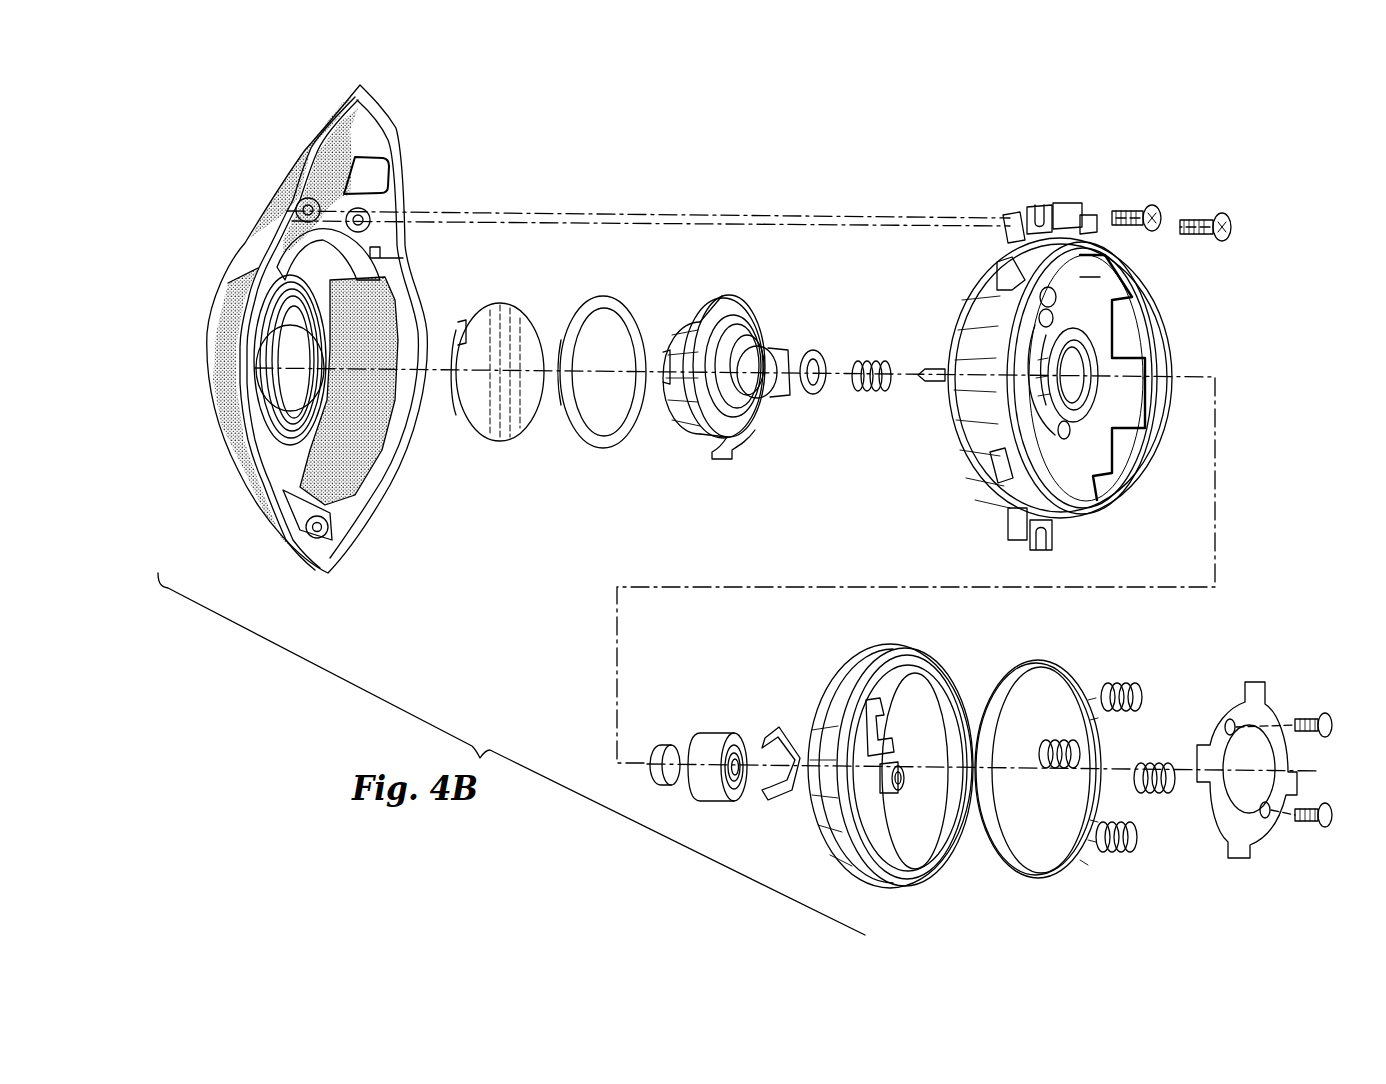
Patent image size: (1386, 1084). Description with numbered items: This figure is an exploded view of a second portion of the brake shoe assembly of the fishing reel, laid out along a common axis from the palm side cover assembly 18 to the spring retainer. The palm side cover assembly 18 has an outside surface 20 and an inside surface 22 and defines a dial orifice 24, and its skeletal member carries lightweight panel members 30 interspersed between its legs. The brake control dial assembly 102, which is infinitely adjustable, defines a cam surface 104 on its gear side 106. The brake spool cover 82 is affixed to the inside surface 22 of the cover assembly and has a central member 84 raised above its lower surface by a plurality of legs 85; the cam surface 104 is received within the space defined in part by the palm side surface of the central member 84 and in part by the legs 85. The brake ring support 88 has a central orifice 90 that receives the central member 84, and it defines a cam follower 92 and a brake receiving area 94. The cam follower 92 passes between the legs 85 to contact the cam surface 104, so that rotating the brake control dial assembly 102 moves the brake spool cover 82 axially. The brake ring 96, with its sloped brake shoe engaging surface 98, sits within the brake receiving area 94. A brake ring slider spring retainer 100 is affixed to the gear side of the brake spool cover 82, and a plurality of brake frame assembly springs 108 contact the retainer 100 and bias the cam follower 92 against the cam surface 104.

The palm side cover assembly 18 is at (212, 293).
The outside surface 20 is at (250, 257).
The inside surface 22 is at (385, 228).
The dial orifice 24 is at (285, 386).
The panel members 30 is at (285, 180).
The brake spool cover 82 is at (1073, 192).
The central member 84 is at (1095, 352).
The legs 85 is at (1030, 388).
The brake ring support 88 is at (902, 650).
The central orifice 90 is at (883, 803).
The cam follower 92 is at (883, 733).
The brake receiving area 94 is at (913, 853).
The brake ring 96 is at (1055, 877).
The sloped brake shoe engaging surface 98 is at (1077, 833).
The brake ring slider spring retainer 100 is at (1258, 695).
The brake control dial assembly 102 is at (782, 276).
The cam surface 104 is at (785, 367).
The gear side 106 is at (768, 315).
The brake frame assembly springs 108 is at (1130, 678).